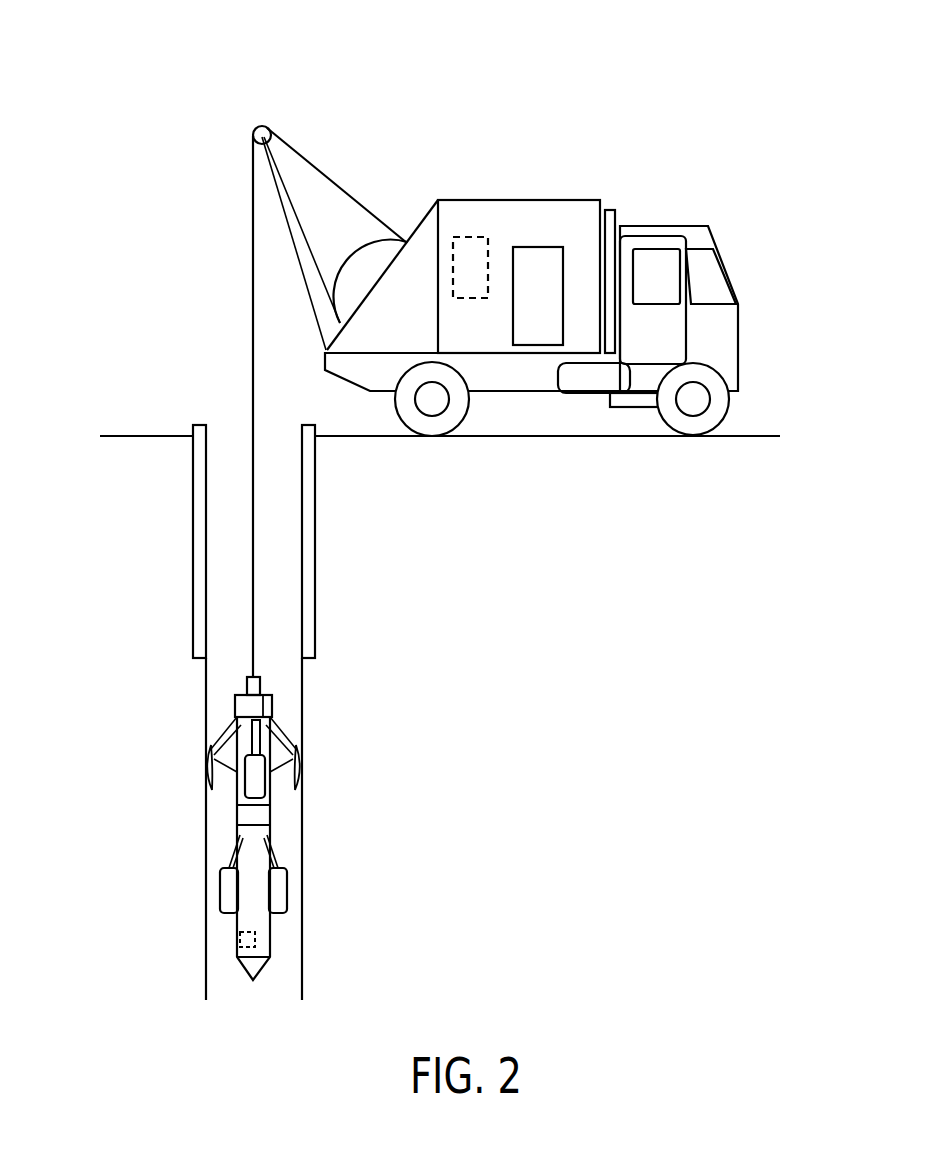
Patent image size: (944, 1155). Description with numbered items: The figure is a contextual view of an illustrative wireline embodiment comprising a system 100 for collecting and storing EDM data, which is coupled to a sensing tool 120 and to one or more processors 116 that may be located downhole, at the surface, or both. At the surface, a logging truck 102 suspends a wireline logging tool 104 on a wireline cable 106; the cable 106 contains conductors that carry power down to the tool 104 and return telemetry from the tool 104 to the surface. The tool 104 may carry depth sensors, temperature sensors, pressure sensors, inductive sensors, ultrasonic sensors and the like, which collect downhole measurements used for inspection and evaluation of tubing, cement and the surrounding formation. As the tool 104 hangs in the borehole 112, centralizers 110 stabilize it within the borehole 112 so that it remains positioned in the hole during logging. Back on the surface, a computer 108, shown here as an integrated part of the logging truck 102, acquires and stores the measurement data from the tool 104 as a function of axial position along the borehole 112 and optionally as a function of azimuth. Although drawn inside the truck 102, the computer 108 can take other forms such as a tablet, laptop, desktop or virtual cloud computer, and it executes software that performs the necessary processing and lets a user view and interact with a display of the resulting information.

The system 100 is at (518, 94).
The logging truck 102 is at (575, 200).
The wireline logging tool 104 is at (263, 942).
The wireline cable 106 is at (253, 368).
The computer 108 is at (468, 238).
The centralizers 110 is at (258, 787).
The borehole 112 is at (302, 693).
The processors 116 is at (240, 938).
The sensing tool 120 is at (252, 815).